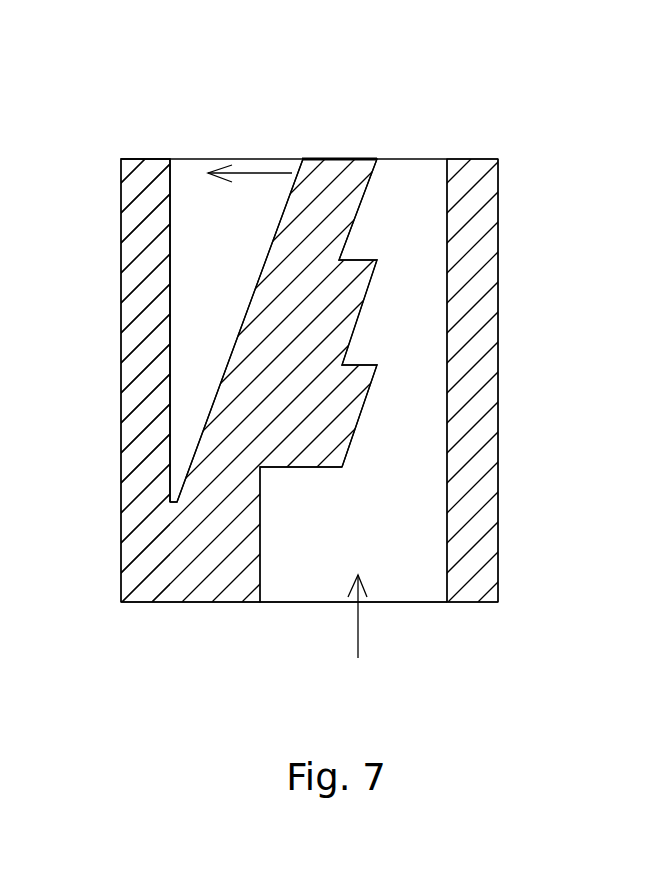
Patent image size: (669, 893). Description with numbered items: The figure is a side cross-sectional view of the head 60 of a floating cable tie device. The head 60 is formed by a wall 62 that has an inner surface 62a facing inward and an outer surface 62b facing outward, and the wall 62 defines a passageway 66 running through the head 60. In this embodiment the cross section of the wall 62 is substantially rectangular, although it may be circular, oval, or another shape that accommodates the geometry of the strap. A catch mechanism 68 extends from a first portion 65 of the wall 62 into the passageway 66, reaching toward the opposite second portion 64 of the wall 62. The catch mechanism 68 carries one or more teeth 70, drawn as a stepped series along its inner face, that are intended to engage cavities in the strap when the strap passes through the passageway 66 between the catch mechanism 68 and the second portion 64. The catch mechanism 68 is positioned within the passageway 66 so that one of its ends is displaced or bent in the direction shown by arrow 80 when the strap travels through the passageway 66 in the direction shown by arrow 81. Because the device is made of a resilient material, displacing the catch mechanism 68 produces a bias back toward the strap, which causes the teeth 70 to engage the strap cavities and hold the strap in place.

The head 60 is at (518, 130).
The wall 62 is at (473, 532).
The inner surface 62a is at (172, 208).
The outer surface 62b is at (498, 472).
The second portion 64 is at (473, 252).
The first portion 65 is at (145, 327).
The passageway 66 is at (390, 508).
The catch mechanism 68 is at (322, 183).
The teeth 70 is at (372, 263).
The arrow 80 is at (250, 184).
The arrow 81 is at (346, 616).